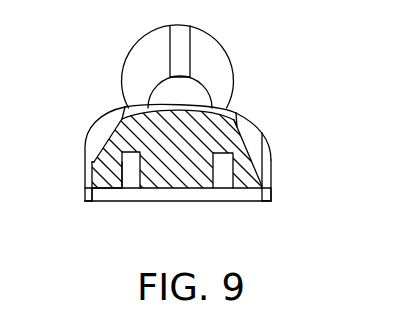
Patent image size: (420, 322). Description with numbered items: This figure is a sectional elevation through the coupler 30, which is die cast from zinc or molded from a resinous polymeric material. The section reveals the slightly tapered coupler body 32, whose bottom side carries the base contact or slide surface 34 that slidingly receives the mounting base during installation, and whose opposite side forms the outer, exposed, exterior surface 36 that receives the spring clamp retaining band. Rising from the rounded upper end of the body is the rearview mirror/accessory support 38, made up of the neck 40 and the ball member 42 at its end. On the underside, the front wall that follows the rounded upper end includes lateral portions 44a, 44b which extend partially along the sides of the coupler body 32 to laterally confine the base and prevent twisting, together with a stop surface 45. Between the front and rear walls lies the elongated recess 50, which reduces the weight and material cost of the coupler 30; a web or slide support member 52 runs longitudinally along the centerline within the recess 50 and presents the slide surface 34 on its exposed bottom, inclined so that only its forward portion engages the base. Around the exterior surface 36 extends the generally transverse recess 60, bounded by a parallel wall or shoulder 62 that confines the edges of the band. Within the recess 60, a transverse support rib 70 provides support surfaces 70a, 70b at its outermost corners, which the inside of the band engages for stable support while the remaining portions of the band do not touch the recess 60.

The coupler 30 is at (267, 46).
The coupler body 32 is at (276, 176).
The base contact or slide surface 34 is at (171, 202).
The outer exterior surface 36 is at (262, 131).
The rearview mirror/accessory support 38 is at (133, 36).
The neck 40 is at (199, 85).
The ball member 42 is at (221, 52).
The lateral portion of wall 44a is at (272, 199).
The lateral portion of wall 44b is at (90, 198).
The stop surface 45 is at (209, 201).
The elongated recess 50 is at (108, 154).
The web or slide support member 52 is at (198, 202).
The transverse recess 60 is at (106, 132).
The wall or shoulder 62 is at (272, 153).
The support rib 70 is at (211, 105).
The support surface 70a is at (126, 108).
The support surface 70b is at (240, 113).